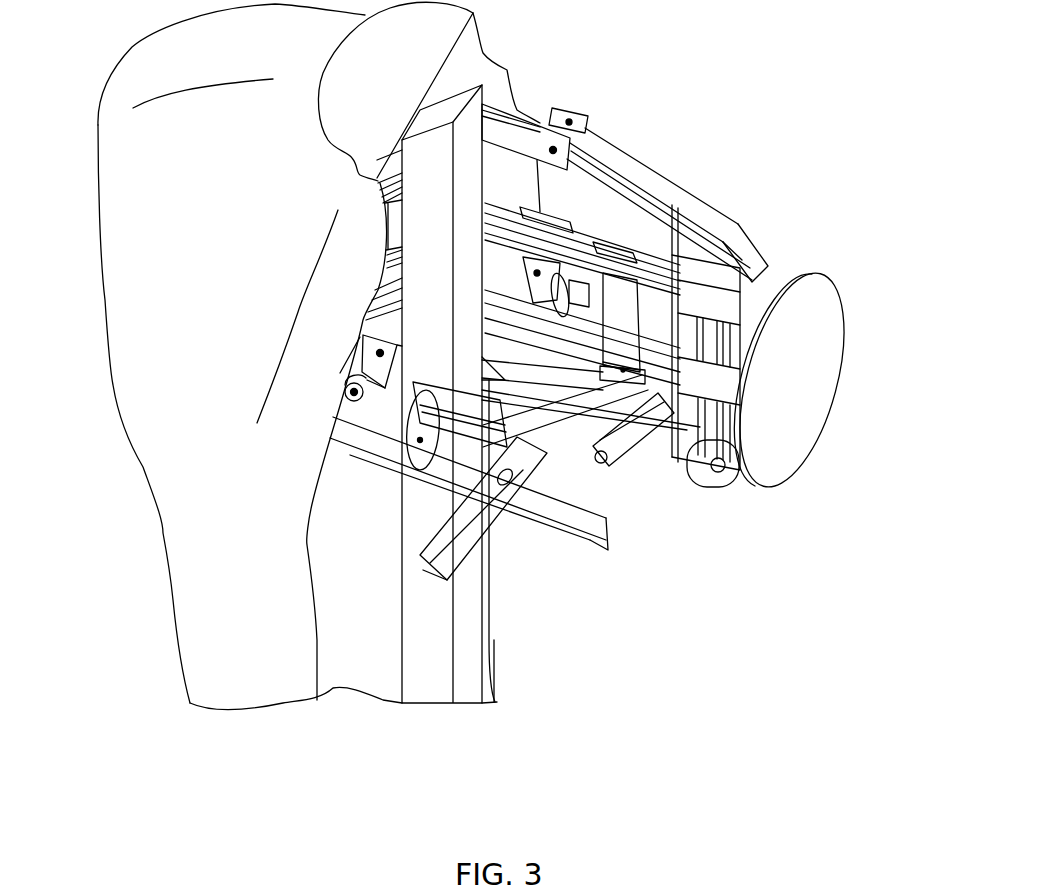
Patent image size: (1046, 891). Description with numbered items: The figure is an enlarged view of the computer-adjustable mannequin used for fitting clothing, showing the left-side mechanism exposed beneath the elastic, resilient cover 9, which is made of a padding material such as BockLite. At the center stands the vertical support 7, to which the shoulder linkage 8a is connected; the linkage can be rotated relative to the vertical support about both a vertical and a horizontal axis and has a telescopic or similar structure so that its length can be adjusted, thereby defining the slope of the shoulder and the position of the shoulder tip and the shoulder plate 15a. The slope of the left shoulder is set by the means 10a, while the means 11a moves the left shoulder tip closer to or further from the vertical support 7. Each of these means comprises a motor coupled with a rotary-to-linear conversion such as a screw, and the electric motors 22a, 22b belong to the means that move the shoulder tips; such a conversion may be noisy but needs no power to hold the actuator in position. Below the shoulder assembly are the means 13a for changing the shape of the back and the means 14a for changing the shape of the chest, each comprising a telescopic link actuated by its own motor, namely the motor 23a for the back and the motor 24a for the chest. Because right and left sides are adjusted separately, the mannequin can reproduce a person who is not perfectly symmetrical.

The vertical support 7 is at (470, 122).
The shoulder linkage 8a is at (613, 152).
The cover 9 is at (245, 620).
The means for adjusting the slope of the left shoulder 10a is at (700, 303).
The means for moving the left shoulder tip closer to and further from the vertical s 11a is at (609, 268).
The means for changing the shape of back 13a is at (653, 445).
The means for changing the shape of chest 14a is at (460, 560).
The shoulder plate 15a is at (827, 337).
The electric motor 22a is at (393, 427).
The electric motor 22b is at (343, 377).
The motor 23a is at (605, 445).
The motor 24a is at (513, 447).